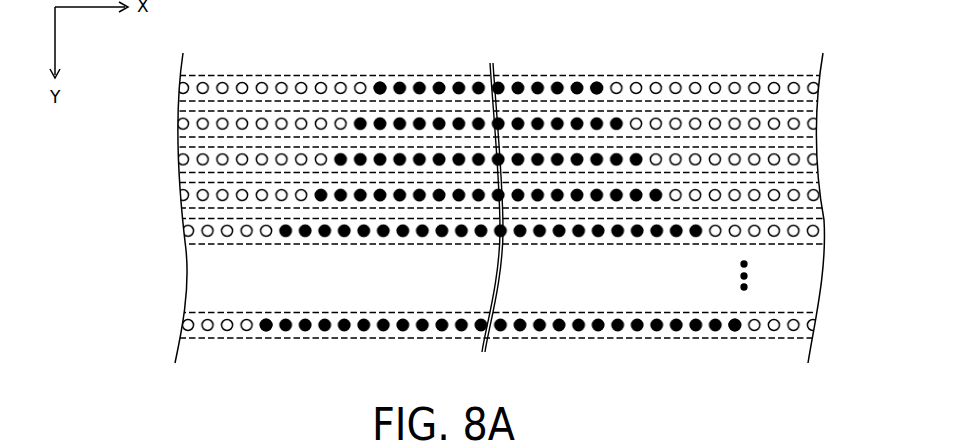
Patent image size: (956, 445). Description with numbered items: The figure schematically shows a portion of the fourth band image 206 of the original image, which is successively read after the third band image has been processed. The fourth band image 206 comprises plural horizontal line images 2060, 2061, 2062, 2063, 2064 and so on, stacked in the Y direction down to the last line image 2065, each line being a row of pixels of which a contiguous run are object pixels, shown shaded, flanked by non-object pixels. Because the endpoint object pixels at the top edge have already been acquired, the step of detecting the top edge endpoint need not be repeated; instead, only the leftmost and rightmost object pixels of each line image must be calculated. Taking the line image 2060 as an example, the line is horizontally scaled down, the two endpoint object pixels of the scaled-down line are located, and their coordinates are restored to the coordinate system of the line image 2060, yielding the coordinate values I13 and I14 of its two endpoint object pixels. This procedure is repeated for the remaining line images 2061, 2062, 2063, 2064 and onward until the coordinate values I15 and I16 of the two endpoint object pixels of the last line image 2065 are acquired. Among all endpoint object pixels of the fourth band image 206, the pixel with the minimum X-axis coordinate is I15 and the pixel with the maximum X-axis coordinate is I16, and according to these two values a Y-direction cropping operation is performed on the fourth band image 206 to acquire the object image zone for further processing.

The fourth band image 206 is at (634, 50).
The line image 2060 is at (228, 75).
The line image 2061 is at (228, 112).
The line image 2062 is at (228, 147).
The line image 2063 is at (233, 182).
The line image 2064 is at (233, 218).
The last line image 2065 is at (235, 312).
The coordinate value of endpoint object pixel I13 is at (378, 82).
The coordinate value of endpoint object pixel I14 is at (598, 82).
The coordinate value of endpoint object pixel I15 is at (263, 331).
The coordinate value of endpoint object pixel I16 is at (736, 331).